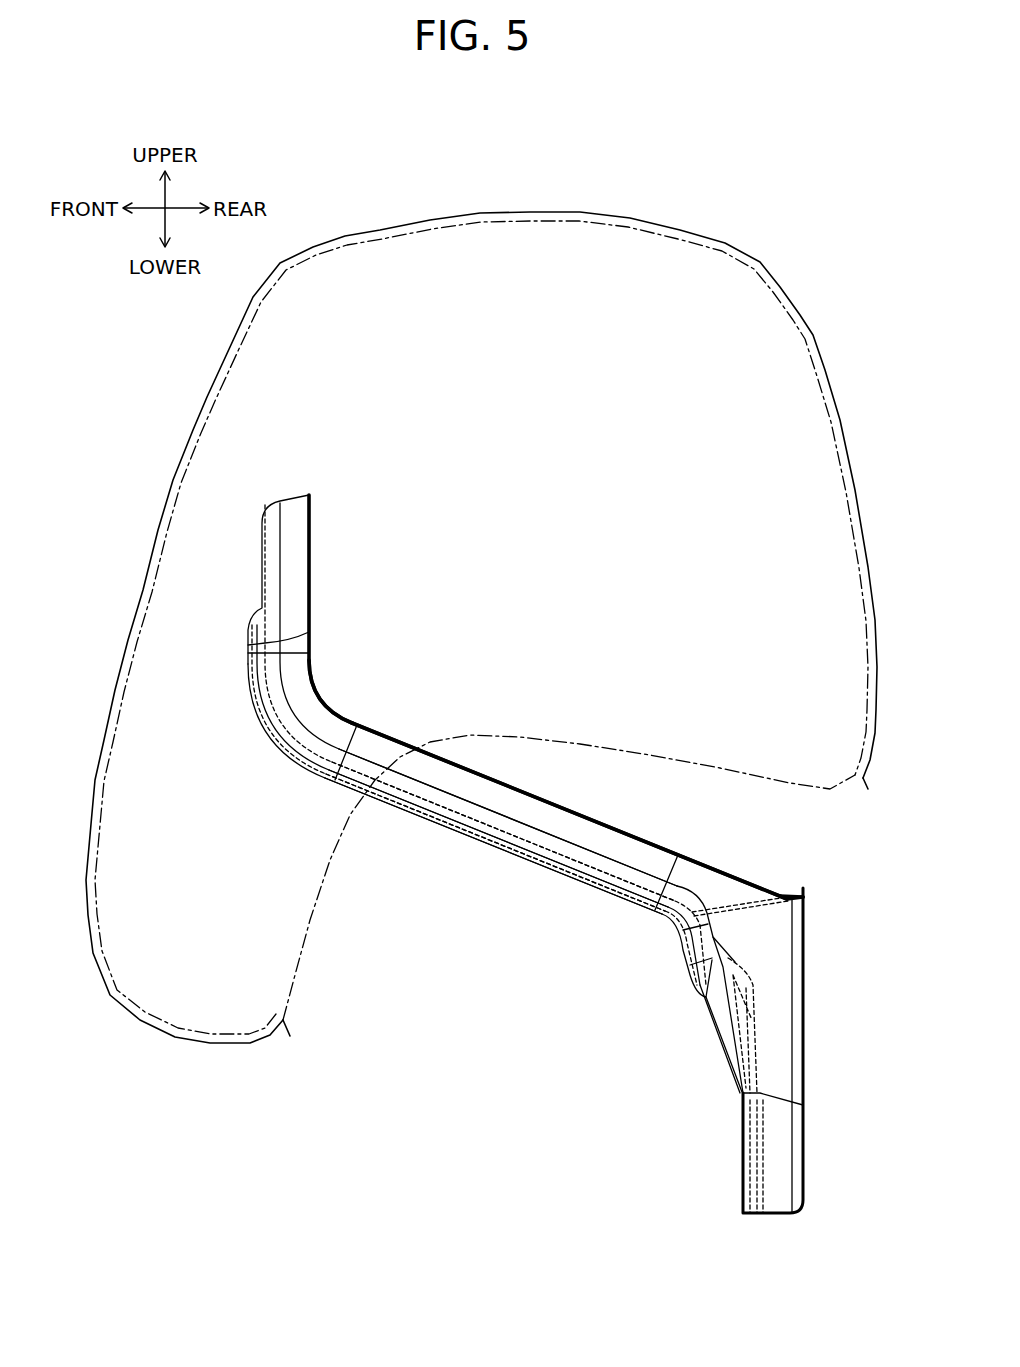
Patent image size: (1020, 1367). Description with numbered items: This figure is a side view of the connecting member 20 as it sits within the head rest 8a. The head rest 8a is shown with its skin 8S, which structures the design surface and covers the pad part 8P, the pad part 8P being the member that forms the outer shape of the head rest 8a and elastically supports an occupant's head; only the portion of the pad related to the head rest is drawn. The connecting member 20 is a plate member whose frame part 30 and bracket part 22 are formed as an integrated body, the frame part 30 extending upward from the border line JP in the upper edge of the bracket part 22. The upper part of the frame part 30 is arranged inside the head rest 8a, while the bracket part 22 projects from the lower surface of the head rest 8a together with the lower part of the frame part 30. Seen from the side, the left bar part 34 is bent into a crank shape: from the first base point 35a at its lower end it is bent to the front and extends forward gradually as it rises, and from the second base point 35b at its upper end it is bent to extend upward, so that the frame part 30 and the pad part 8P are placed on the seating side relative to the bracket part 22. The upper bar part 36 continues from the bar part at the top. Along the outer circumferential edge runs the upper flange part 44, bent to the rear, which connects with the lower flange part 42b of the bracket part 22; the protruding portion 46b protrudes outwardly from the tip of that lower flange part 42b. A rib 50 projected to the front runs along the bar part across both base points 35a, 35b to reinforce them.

The head rest 8a is at (788, 210).
The skin 8S is at (577, 212).
The pad part 8P is at (665, 265).
The connecting member 20 is at (360, 458).
The frame part 30 is at (540, 838).
The upper bar part 36 is at (258, 539).
The second base point 35b is at (330, 680).
The left bar part 34 is at (523, 778).
The upper flange part 44 is at (572, 818).
The rib 50 is at (490, 846).
The first base point 35a is at (660, 926).
The bracket part 22 is at (747, 968).
The protruding portion 46b is at (806, 1028).
The lower flange part 42b is at (778, 1066).
The border line JP is at (774, 883).